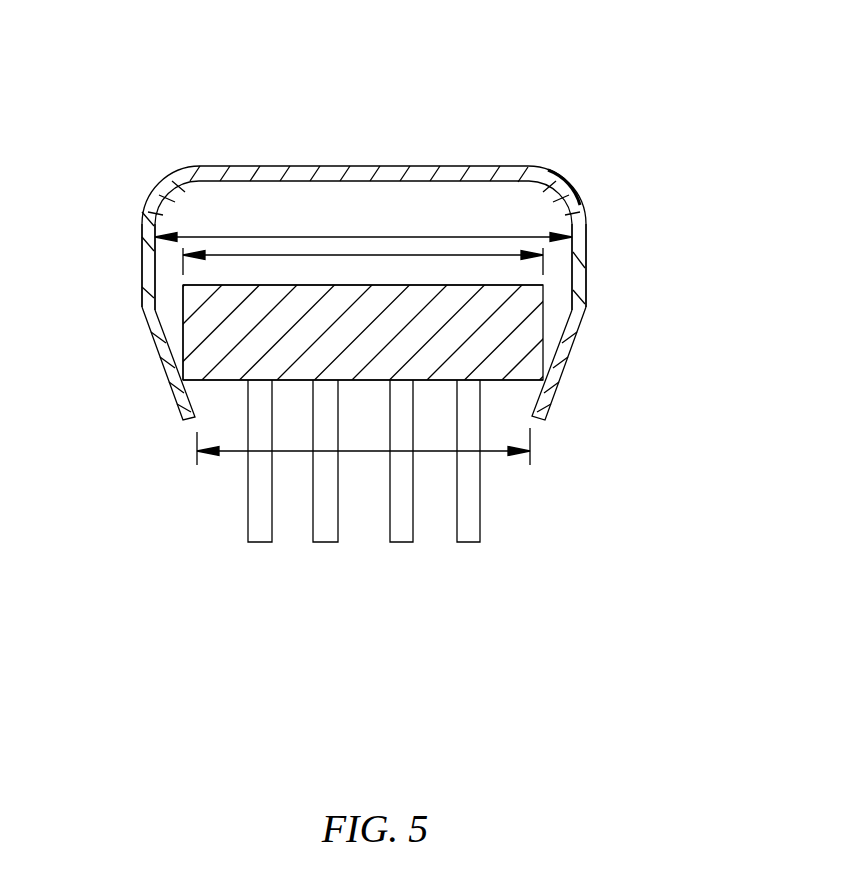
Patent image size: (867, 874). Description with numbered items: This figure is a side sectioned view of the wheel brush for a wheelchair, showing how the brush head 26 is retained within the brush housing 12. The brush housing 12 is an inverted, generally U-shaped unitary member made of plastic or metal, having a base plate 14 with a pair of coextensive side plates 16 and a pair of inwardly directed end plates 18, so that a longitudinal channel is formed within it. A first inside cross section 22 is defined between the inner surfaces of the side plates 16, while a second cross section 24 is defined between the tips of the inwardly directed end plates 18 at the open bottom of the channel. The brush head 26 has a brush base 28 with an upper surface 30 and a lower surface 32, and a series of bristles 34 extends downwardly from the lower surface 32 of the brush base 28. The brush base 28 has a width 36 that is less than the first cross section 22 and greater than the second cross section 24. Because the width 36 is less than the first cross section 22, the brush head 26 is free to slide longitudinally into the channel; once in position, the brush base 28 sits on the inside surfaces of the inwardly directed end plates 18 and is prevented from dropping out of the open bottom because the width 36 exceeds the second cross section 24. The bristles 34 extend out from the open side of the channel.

The brush housing 12 is at (332, 158).
The base plate 14 is at (450, 173).
The side plates 16 is at (140, 262).
The inwardly directed end plates 18 is at (165, 367).
The first inside cross section 22 is at (360, 237).
The second cross section 24 is at (372, 451).
The brush head 26 is at (487, 330).
The brush base 28 is at (462, 357).
The upper surface 30 is at (232, 287).
The lower surface 32 is at (220, 383).
The bristles 34 is at (258, 525).
The width 36 is at (305, 255).